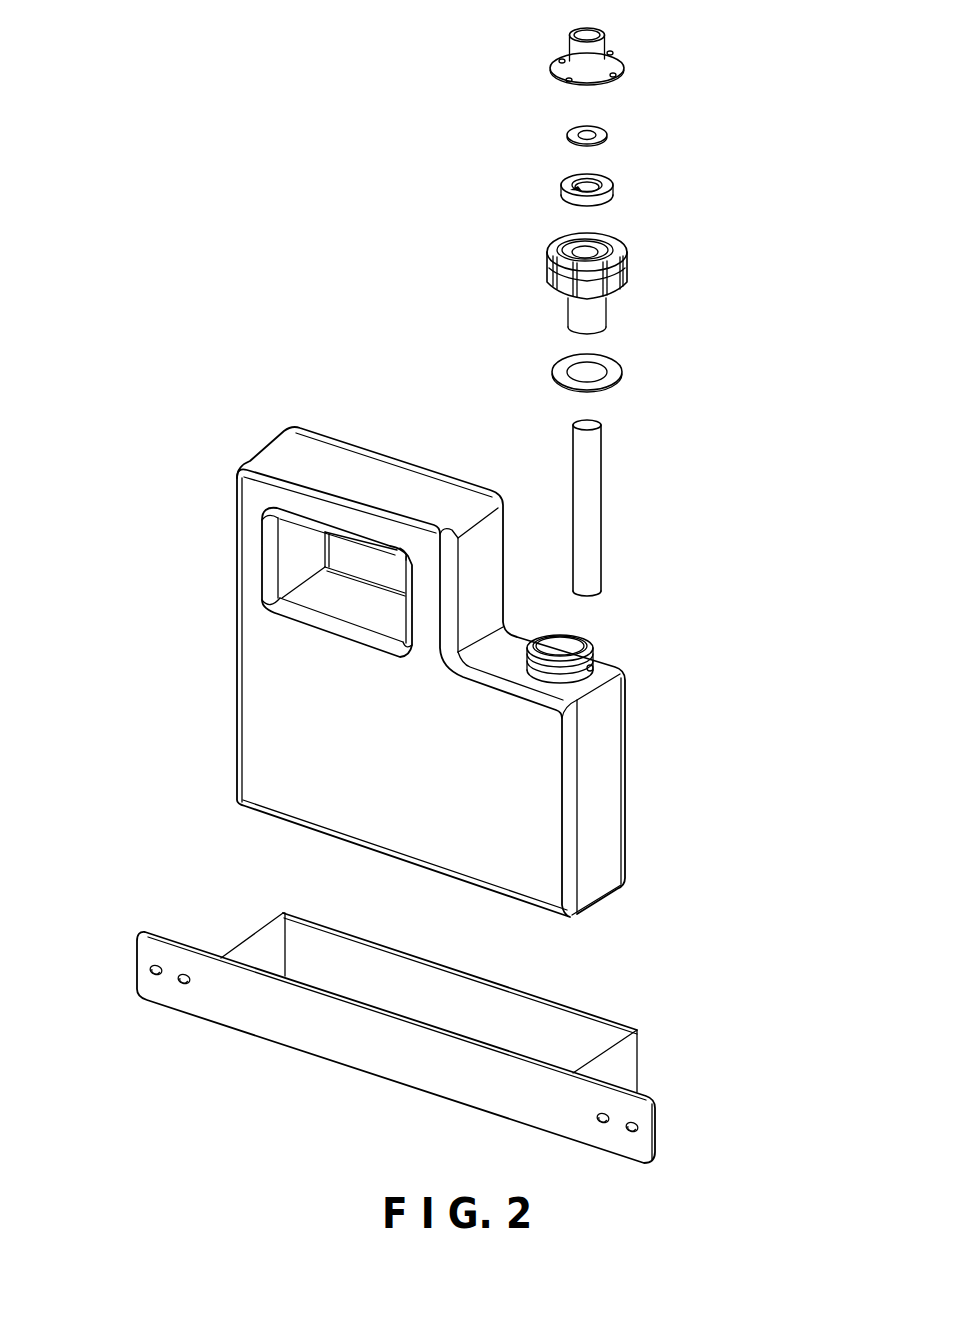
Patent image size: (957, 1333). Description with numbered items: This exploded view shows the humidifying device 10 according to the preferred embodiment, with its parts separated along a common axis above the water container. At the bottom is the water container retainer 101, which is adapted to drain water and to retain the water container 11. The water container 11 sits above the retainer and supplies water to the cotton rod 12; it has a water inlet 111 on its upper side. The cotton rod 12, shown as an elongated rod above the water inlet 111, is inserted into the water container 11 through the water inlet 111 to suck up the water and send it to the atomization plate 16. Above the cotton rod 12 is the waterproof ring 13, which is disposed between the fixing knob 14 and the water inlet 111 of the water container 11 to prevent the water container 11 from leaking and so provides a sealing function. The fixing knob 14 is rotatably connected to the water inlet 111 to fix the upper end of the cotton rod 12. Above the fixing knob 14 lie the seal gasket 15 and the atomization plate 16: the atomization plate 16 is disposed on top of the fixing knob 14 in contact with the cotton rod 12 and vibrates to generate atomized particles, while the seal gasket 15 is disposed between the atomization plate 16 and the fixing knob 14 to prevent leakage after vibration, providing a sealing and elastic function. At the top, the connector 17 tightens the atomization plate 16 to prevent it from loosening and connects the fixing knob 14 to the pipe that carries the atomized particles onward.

The humidifying device 10 is at (434, 98).
The water container 11 is at (268, 689).
The water inlet 111 is at (567, 648).
The cotton rod 12 is at (599, 498).
The waterproof ring 13 is at (616, 367).
The fixing knob 14 is at (628, 270).
The seal gasket 15 is at (623, 183).
The atomization plate 16 is at (623, 128).
The connector 17 is at (636, 63).
The water container retainer 101 is at (237, 1030).